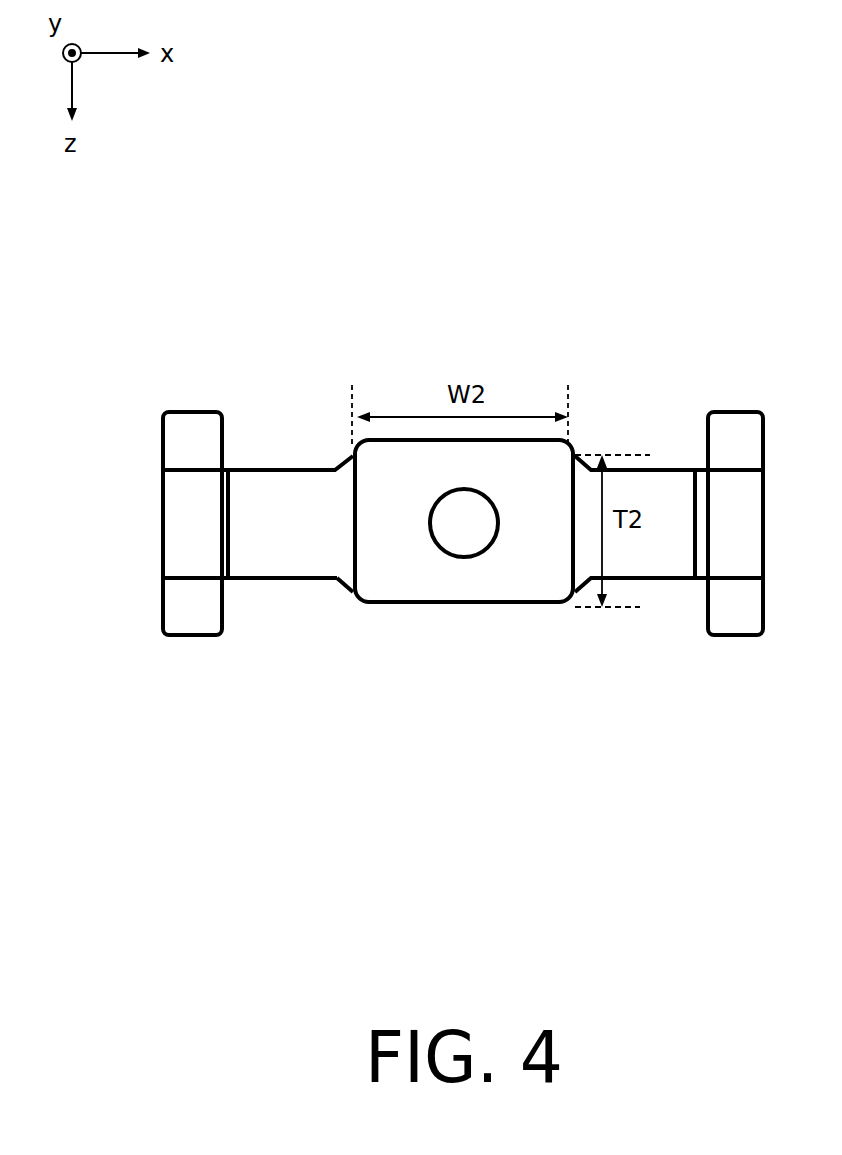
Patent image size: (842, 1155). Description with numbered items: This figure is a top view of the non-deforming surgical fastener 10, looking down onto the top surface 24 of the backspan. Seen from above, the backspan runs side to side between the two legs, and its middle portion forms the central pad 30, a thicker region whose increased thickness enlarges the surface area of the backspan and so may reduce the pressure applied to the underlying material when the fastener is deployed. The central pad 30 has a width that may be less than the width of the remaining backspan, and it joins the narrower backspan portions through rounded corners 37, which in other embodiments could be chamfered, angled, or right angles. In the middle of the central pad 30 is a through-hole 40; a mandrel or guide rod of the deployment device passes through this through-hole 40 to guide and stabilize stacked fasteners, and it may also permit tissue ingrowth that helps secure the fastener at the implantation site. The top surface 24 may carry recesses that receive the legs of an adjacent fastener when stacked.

The surgical fastener 10 is at (643, 190).
The top surface of the backspan 24 is at (304, 505).
The central pad 30 is at (447, 590).
The rounded corners 37 is at (340, 608).
The through-hole 40 is at (462, 543).